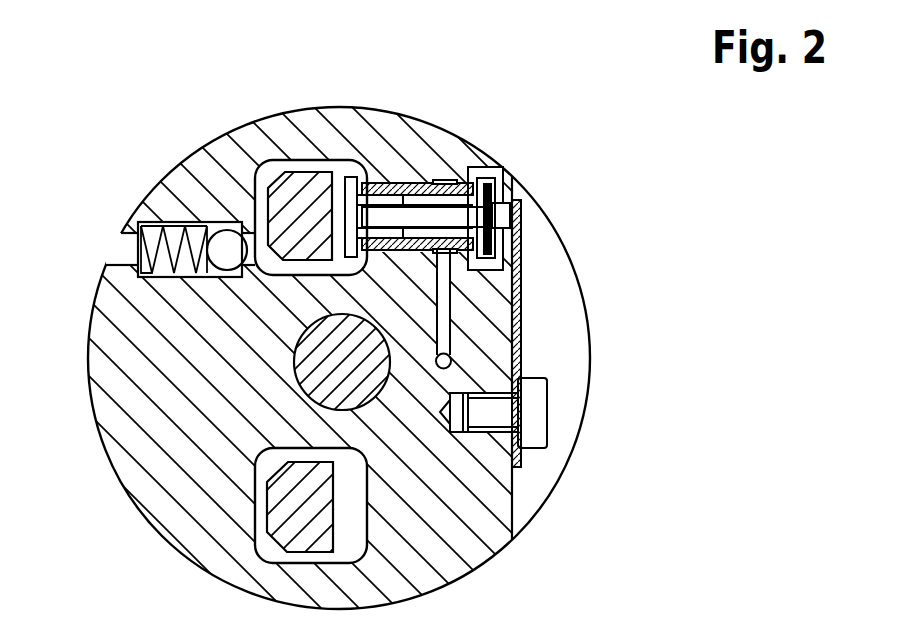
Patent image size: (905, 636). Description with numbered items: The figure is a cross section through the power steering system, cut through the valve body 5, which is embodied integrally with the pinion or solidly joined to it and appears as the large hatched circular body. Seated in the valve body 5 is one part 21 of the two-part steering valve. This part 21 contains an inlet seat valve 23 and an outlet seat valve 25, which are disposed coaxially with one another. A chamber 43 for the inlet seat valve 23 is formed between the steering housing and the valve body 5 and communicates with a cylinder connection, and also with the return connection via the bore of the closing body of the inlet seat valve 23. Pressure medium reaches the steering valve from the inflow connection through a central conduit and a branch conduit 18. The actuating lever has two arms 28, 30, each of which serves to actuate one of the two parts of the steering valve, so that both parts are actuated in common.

The part of the steering valve 21 is at (540, 173).
The valve body 5 is at (157, 468).
The arm 28 is at (290, 210).
The arm 30 is at (293, 512).
The outlet seat valve 25 is at (367, 170).
The inlet seat valve 23 is at (463, 168).
The chamber 43 is at (547, 292).
The branch conduit 18 is at (443, 339).